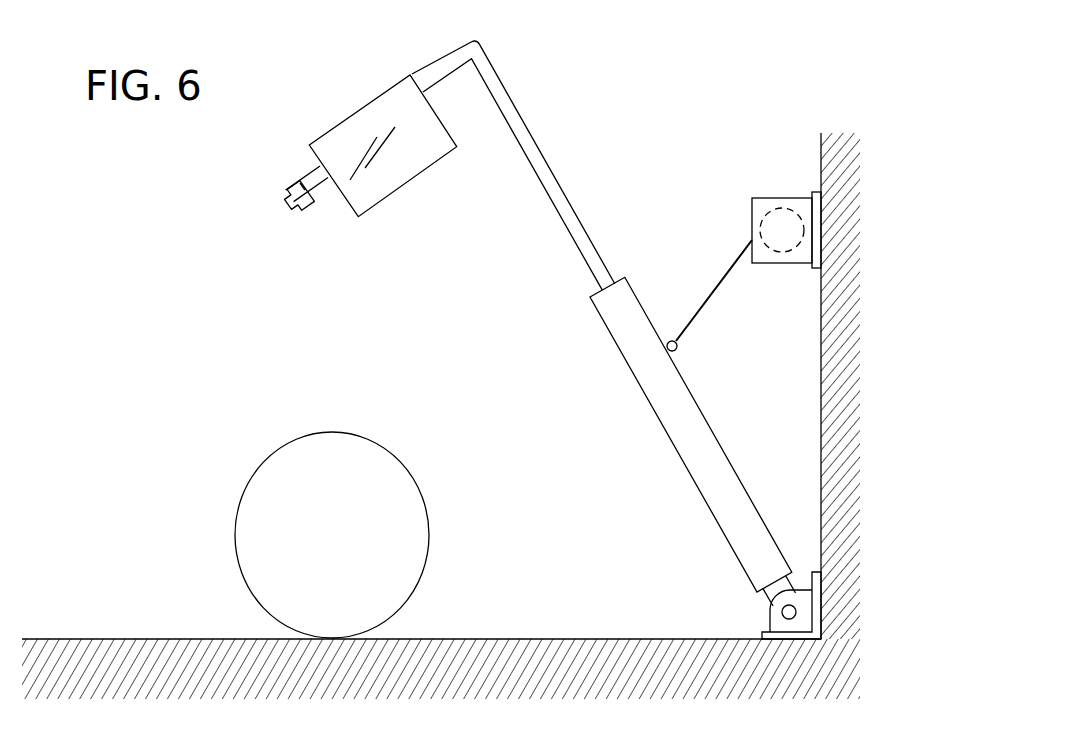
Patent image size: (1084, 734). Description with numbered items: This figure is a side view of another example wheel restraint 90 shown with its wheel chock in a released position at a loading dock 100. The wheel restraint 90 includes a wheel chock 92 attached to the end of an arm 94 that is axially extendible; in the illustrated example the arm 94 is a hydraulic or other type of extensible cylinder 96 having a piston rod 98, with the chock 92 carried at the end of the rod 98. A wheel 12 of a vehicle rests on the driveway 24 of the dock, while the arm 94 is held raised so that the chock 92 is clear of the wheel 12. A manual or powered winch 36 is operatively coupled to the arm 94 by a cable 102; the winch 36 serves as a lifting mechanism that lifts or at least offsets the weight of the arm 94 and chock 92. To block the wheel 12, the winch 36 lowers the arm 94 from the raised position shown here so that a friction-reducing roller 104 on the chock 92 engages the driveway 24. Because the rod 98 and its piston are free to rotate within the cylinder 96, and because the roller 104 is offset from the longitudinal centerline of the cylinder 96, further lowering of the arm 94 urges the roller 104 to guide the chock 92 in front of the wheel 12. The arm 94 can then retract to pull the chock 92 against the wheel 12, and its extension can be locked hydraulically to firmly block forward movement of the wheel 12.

The wheel 12 is at (235, 555).
The driveway 24 is at (558, 639).
The winch 36 is at (750, 210).
The wheel restraint 90 is at (228, 318).
The wheel chock 92 is at (395, 193).
The arm 94 is at (526, 322).
The cylinder 96 is at (675, 458).
The piston rod 98 is at (567, 230).
The loading dock 100 is at (535, 483).
The cable 102 is at (713, 293).
The roller 104 is at (281, 199).